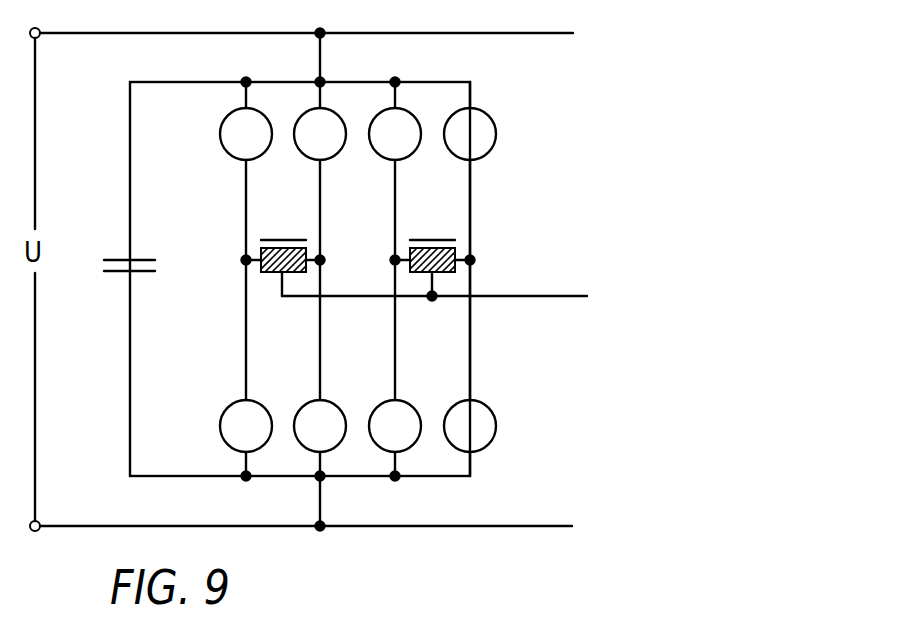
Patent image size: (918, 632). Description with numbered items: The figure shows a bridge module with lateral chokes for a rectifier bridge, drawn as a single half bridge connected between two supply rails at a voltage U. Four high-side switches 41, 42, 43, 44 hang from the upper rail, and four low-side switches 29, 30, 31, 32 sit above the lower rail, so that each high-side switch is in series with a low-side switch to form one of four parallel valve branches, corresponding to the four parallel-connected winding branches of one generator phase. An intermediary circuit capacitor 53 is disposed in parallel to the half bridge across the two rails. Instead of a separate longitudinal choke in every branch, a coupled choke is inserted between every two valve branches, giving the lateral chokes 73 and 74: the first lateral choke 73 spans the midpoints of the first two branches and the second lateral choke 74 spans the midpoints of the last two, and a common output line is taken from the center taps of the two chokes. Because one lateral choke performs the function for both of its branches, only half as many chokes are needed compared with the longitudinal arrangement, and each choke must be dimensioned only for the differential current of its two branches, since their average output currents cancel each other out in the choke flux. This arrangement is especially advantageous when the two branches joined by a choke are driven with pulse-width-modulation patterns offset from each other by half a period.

The low-side switch 29 is at (227, 419).
The low-side switch 30 is at (309, 419).
The low-side switch 31 is at (382, 419).
The low-side switch 32 is at (458, 419).
The high-side switch 41 is at (227, 138).
The high-side switch 42 is at (301, 138).
The high-side switch 43 is at (376, 138).
The high-side switch 44 is at (451, 138).
The intermediary circuit capacitor 53 is at (140, 272).
The lateral choke 73 is at (264, 272).
The lateral choke 74 is at (431, 240).